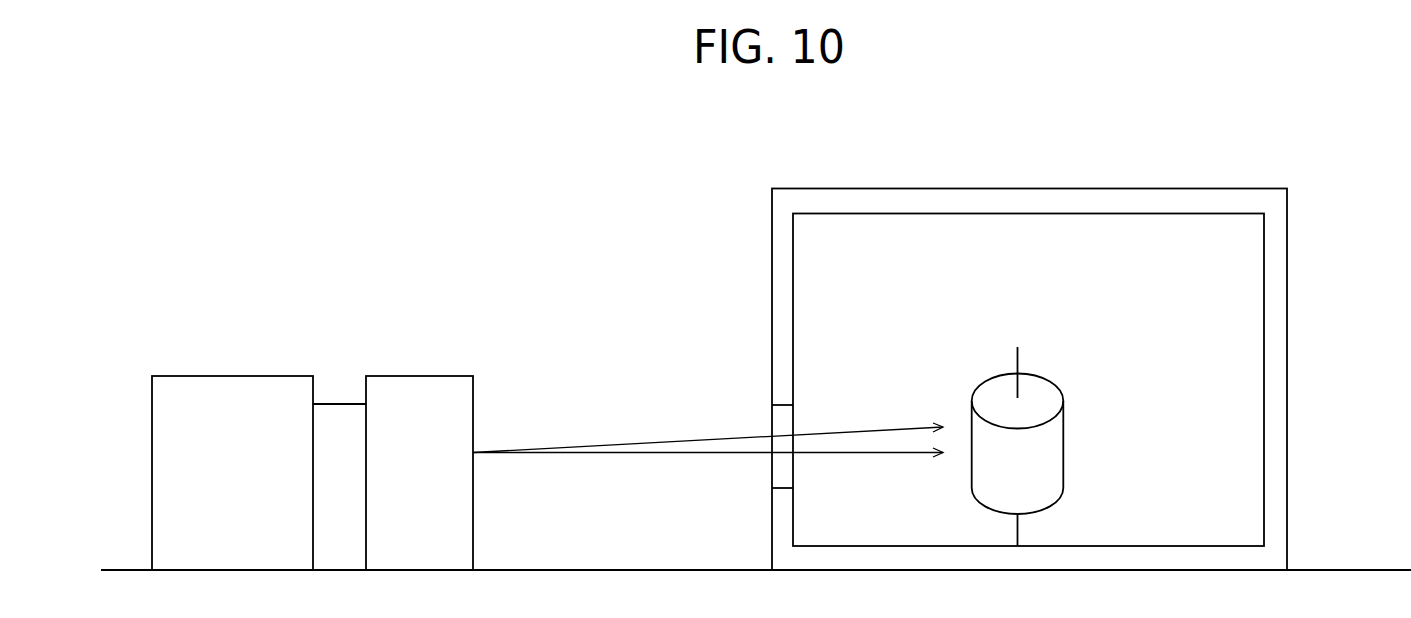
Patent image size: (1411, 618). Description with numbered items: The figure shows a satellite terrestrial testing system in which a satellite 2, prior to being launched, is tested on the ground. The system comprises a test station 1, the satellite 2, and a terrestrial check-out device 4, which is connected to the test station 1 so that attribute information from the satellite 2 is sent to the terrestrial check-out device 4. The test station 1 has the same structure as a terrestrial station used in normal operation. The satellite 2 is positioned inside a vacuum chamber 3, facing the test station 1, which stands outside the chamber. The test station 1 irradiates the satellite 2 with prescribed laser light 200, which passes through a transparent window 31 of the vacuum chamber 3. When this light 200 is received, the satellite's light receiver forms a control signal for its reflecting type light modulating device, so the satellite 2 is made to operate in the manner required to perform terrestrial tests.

The terrestrial check-out device 4 is at (236, 376).
The test station 1 is at (426, 376).
The prescribed light 200 is at (566, 446).
The vacuum chamber 3 is at (767, 285).
The transparent window 31 is at (767, 468).
The satellite 2 is at (1063, 435).